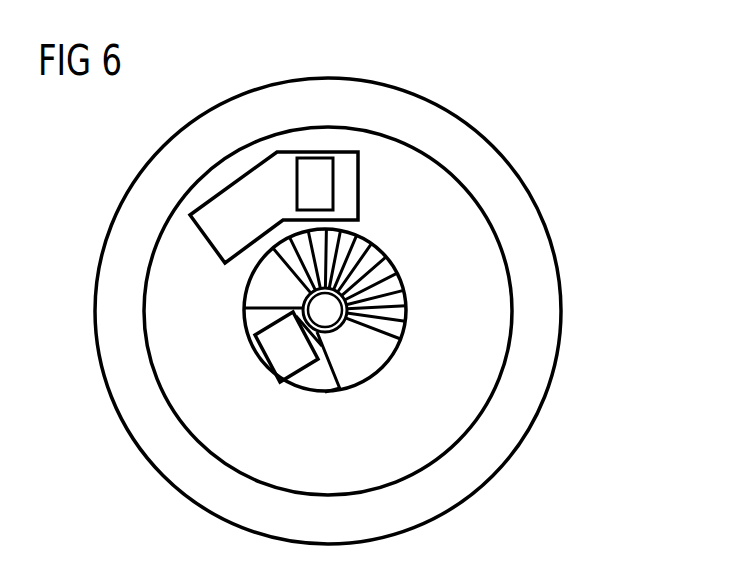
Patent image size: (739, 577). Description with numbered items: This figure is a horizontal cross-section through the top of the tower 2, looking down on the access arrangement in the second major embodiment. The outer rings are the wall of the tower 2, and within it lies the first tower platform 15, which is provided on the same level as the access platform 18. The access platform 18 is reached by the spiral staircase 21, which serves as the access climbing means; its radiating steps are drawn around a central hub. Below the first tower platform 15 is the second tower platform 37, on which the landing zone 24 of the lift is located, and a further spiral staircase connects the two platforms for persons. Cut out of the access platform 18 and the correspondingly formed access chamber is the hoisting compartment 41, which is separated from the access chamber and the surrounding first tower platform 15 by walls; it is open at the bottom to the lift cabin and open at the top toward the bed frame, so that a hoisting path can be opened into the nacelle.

The tower 2 is at (560, 308).
The first tower platform 15 is at (250, 433).
The access platform 18 is at (268, 287).
The spiral staircase 21 is at (387, 310).
The landing zone 24 is at (263, 350).
The second tower platform 37 is at (255, 320).
The hoisting compartment 41 is at (307, 392).